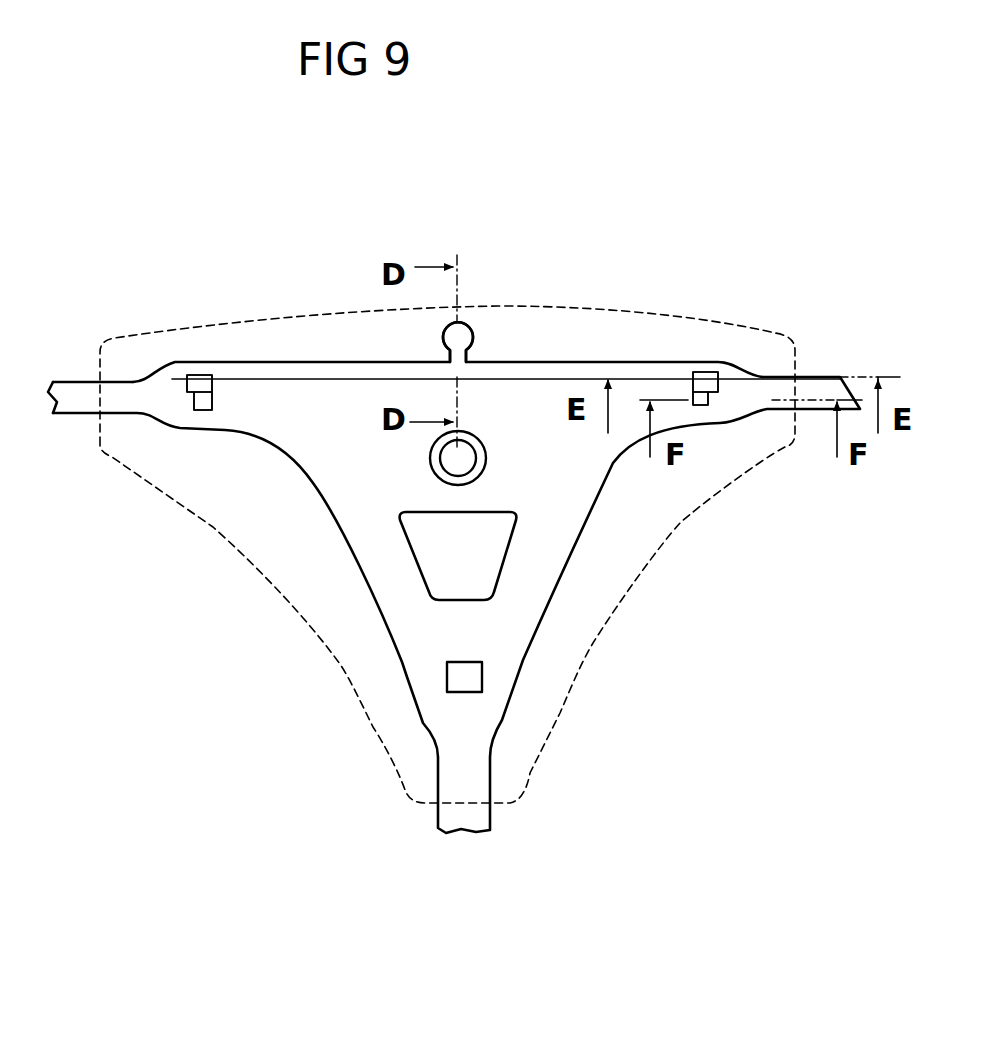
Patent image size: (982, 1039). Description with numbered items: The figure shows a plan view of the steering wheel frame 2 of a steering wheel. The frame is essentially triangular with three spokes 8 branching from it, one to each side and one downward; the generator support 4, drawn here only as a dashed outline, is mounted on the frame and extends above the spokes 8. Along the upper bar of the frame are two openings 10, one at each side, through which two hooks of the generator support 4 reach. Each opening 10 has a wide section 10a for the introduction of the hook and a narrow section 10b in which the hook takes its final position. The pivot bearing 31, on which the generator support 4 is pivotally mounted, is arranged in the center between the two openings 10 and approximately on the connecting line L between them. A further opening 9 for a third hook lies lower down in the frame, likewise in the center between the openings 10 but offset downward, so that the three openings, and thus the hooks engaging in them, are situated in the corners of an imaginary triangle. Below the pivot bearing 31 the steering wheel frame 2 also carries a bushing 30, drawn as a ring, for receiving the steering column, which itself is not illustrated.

The steering wheel frame 2 is at (308, 370).
The generator support 4 is at (562, 305).
The spokes 8 is at (80, 407).
The opening 9 is at (470, 677).
The openings 10 is at (163, 373).
The wide section 10a is at (197, 377).
The narrow section 10b is at (202, 402).
The bushing 30 is at (433, 458).
The pivot bearing 31 is at (460, 335).
The connecting line L is at (368, 377).